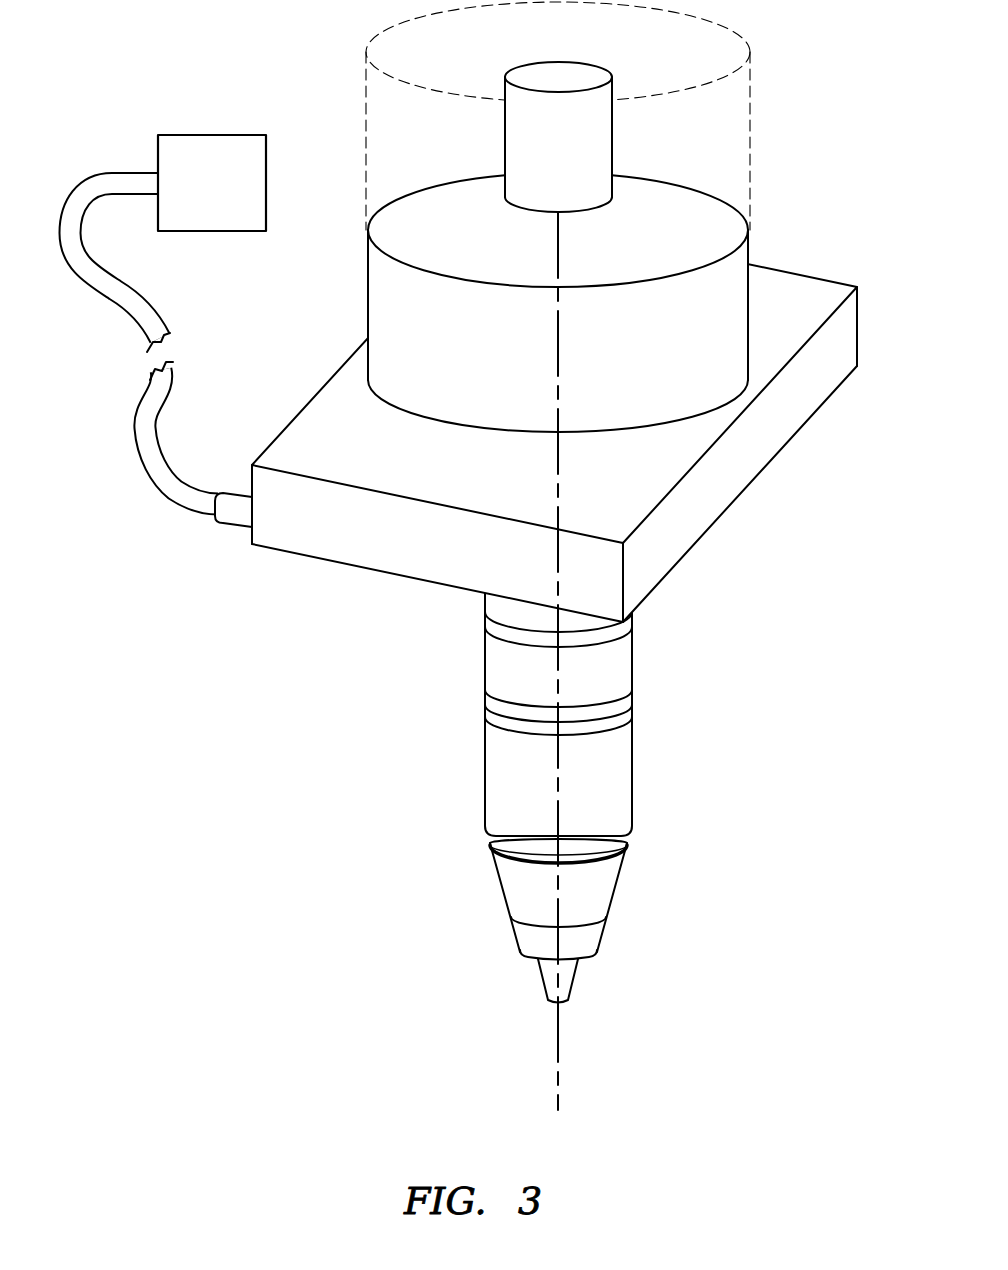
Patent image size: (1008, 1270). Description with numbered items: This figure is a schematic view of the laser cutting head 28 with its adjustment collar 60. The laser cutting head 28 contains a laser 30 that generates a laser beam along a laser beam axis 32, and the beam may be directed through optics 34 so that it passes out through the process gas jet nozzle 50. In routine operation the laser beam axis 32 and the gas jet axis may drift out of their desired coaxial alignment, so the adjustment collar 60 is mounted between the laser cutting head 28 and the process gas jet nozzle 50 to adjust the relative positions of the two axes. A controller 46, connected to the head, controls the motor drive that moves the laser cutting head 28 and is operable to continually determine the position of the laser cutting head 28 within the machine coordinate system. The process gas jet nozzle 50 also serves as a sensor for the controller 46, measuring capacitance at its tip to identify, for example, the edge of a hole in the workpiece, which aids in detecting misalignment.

The laser cutting head 28 is at (750, 252).
The laser 30 is at (755, 107).
The laser beam axis 32 is at (558, 1095).
The optics 34 is at (522, 135).
The controller 46 is at (198, 194).
The process gas jet nozzle 50 is at (632, 873).
The adjustment collar 60 is at (753, 453).